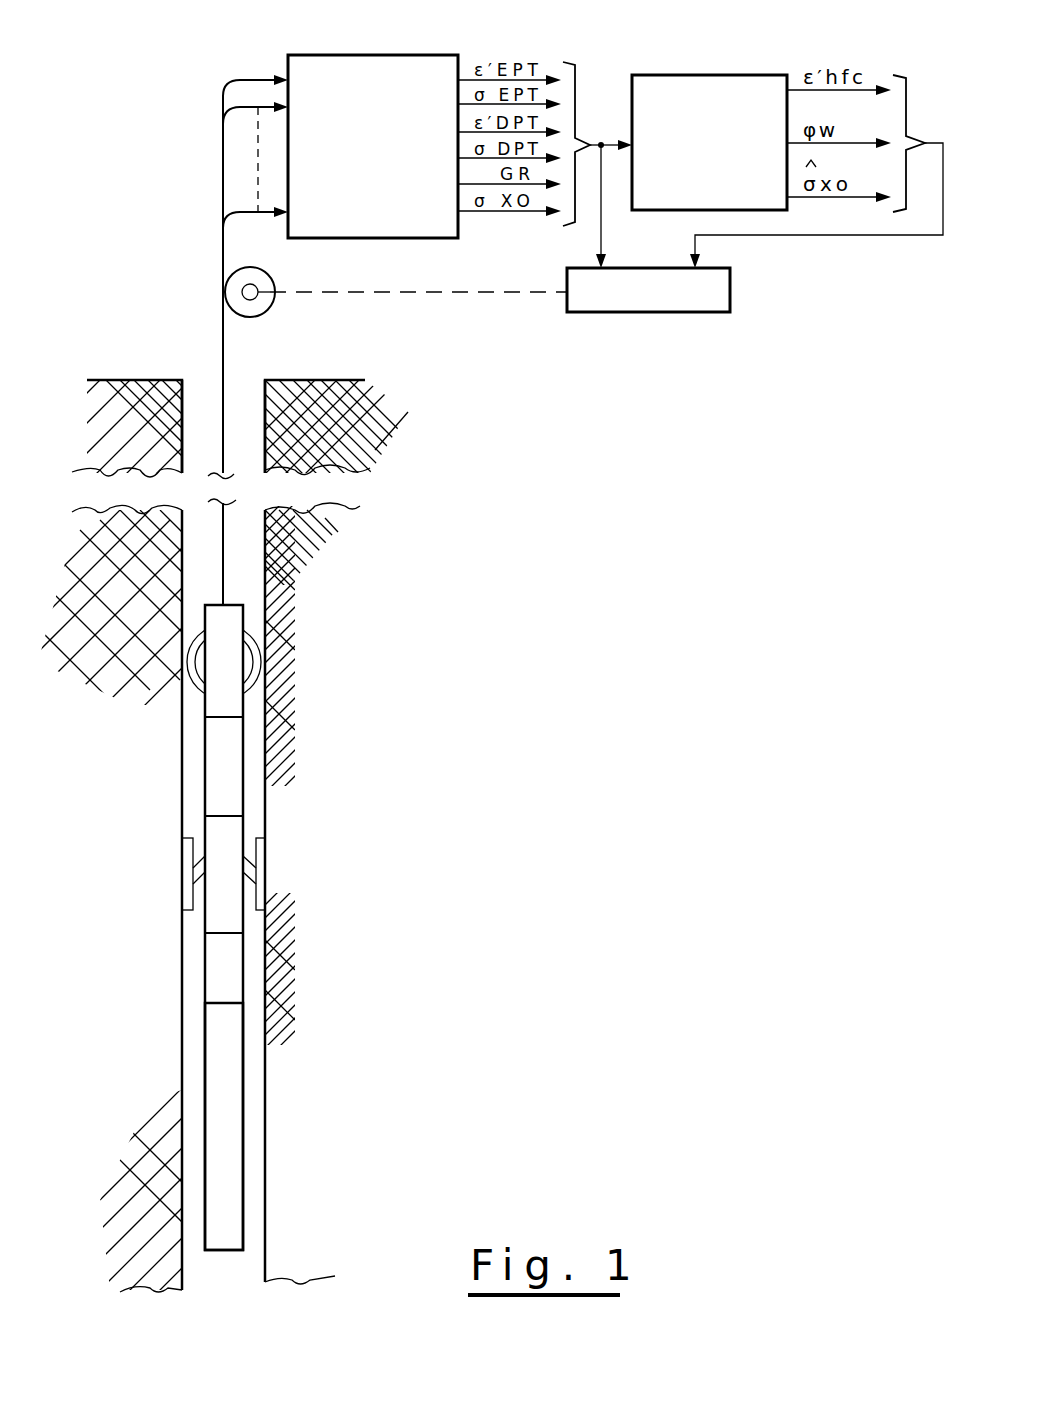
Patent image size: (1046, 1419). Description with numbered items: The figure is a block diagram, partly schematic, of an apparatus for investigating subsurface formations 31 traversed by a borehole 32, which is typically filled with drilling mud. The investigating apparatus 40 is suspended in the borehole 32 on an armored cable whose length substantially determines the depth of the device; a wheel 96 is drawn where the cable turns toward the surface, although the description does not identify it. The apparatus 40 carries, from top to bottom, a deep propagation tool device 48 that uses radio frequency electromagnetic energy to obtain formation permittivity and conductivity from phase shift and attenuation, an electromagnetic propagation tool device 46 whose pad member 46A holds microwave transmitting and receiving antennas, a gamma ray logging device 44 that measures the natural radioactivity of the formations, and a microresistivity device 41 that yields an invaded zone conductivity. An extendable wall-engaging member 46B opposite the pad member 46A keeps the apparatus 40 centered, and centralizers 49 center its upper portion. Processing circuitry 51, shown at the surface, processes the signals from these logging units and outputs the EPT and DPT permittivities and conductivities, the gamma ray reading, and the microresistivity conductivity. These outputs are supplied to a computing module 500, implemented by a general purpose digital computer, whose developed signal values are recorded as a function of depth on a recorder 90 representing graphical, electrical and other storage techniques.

The processing circuitry 51 is at (343, 60).
The computing module 500 is at (720, 82).
The recorder 90 is at (728, 278).
The sheave wheel / depth pulley 96 is at (268, 280).
The subsurface formations 31 is at (118, 388).
The borehole 32 is at (203, 386).
The investigating apparatus 40 is at (212, 600).
The centralizers 49 is at (192, 636).
The deep propagation tool device 48 is at (205, 727).
The electromagnetic propagation tool device 46 is at (242, 828).
The pad member 46A is at (265, 850).
The extendable wall-engaging member 46B is at (182, 848).
The gamma ray logging device 44 is at (205, 945).
The microresistivity device 41 is at (205, 1027).